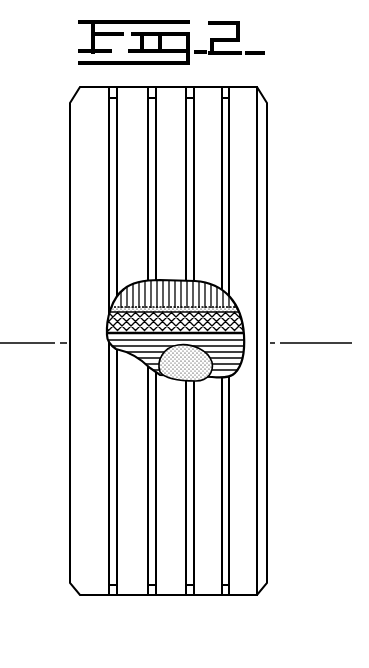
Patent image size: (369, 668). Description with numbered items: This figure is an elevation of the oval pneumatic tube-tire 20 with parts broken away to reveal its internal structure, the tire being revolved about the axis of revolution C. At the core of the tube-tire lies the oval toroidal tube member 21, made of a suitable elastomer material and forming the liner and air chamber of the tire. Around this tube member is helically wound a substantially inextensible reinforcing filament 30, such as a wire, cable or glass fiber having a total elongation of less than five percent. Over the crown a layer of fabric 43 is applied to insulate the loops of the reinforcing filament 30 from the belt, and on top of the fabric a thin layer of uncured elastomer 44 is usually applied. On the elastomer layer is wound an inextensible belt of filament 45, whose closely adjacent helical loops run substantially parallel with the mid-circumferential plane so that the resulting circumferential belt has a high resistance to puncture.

The oval pneumatic tube-tire 20 is at (272, 216).
The filament of the circumferential belt 45 is at (183, 295).
The thin layer of uncured elastomer 44 is at (113, 309).
The layer of fabric 43 is at (112, 324).
The inextensible reinforcing filament 30 is at (127, 349).
The oval toroidal tube member 21 is at (232, 375).
The axis of revolution C is at (311, 338).